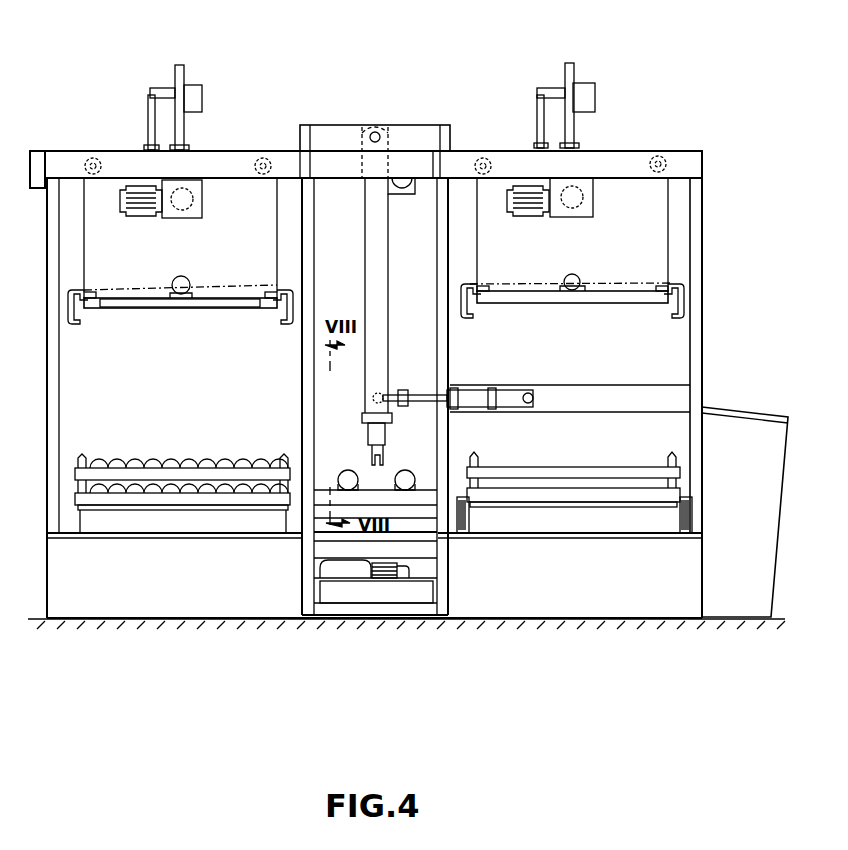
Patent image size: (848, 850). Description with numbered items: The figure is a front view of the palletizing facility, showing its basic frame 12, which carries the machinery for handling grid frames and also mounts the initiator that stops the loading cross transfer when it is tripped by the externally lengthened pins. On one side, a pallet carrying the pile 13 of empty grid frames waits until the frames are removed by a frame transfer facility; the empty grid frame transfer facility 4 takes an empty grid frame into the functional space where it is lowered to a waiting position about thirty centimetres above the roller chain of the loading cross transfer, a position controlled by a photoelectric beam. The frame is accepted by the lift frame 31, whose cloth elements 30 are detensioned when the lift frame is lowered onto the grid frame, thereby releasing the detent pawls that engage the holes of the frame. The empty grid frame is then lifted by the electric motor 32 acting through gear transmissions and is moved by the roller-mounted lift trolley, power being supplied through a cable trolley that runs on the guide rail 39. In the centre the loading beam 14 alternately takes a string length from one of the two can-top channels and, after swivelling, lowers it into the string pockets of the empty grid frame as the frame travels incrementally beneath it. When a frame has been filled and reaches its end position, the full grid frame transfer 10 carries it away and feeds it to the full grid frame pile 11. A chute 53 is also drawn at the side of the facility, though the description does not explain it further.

The empty grid frame transfer facility 4 is at (657, 251).
The full grid frame transfer 10 is at (237, 268).
The full grid frame pile 11 is at (137, 478).
The basic frame 12 is at (700, 317).
The pile of empty grid frames 13 is at (572, 485).
The loading beam 14 is at (388, 253).
The cloth elements 30 is at (668, 204).
The lift frame 31 is at (118, 308).
The electric motor 32 is at (150, 187).
The guide rail 39 is at (180, 65).
The discharge chute 53 is at (742, 428).